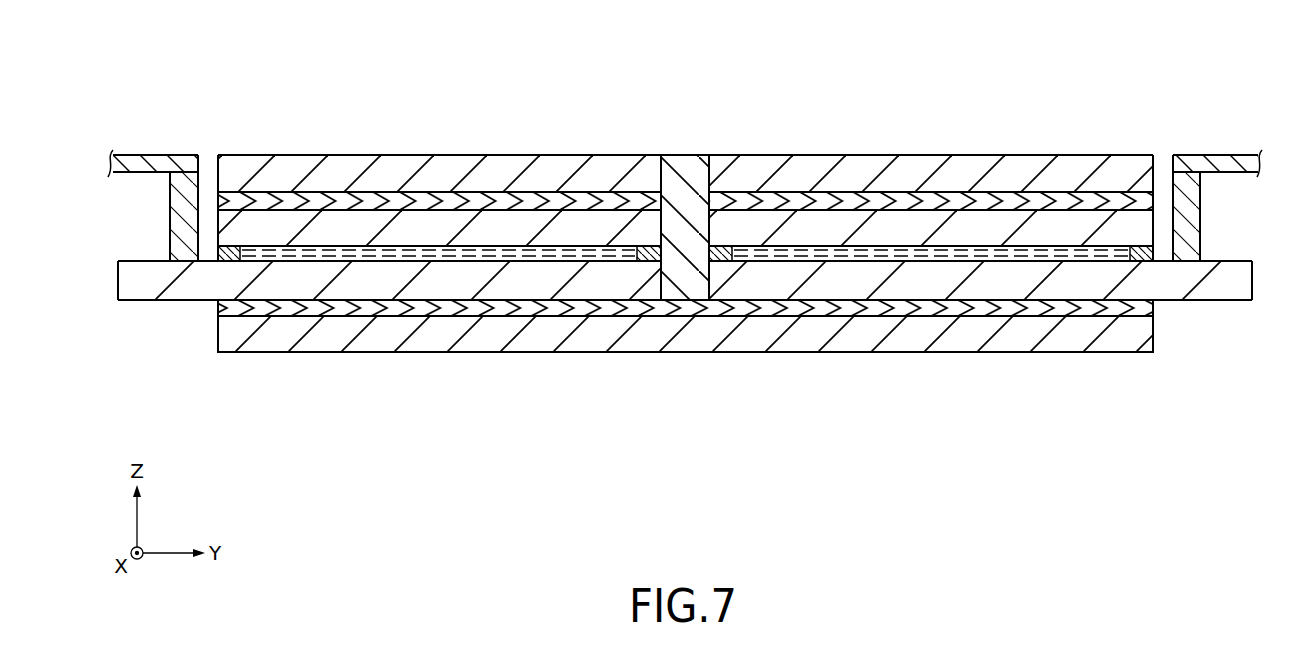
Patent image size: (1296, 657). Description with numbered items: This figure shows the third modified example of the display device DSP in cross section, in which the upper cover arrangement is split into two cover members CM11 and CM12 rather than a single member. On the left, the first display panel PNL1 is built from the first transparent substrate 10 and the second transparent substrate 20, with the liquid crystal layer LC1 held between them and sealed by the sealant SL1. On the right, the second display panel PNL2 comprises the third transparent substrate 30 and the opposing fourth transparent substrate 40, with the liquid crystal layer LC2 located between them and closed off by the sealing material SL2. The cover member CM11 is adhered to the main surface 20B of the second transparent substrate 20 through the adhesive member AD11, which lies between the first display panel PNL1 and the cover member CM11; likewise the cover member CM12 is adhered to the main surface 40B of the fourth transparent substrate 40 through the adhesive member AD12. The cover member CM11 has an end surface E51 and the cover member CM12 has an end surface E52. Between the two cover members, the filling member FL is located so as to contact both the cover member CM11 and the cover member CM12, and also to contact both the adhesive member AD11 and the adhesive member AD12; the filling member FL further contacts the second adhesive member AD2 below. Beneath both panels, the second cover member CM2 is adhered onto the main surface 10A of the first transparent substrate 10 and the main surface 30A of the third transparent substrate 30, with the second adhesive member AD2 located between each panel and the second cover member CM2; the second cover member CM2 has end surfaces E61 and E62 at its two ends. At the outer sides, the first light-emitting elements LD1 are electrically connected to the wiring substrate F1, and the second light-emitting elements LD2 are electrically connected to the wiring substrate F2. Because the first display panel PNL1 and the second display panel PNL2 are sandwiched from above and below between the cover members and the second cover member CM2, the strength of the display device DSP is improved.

The display device DSP is at (1035, 62).
The wiring substrate F1 is at (151, 155).
The wiring substrate F2 is at (1236, 155).
The first light-emitting elements LD1 is at (189, 172).
The second light-emitting elements LD2 is at (1190, 185).
The end surface E51 is at (209, 178).
The end surface E52 is at (1163, 176).
The end surface E61 is at (218, 352).
The end surface E62 is at (1153, 333).
The first display panel PNL1 is at (132, 407).
The second display panel PNL2 is at (772, 407).
The cover member CM11 is at (393, 168).
The cover member CM12 is at (958, 168).
The second cover member CM2 is at (630, 337).
The adhesive member AD11 is at (520, 200).
The adhesive member AD12 is at (1047, 200).
The second adhesive member AD2 is at (737, 312).
The main surface 20B is at (585, 209).
The main surface 40B is at (838, 209).
The second transparent substrate 20 is at (357, 227).
The fourth transparent substrate 40 is at (938, 227).
The first transparent substrate 10 is at (178, 283).
The third transparent substrate 30 is at (1110, 283).
The main surface 10A is at (549, 303).
The main surface 30A is at (885, 303).
The liquid crystal layer LC1 is at (497, 253).
The liquid crystal layer LC2 is at (800, 253).
The sealant SL1 is at (647, 255).
The sealing material SL2 is at (723, 255).
The filling member FL is at (688, 277).